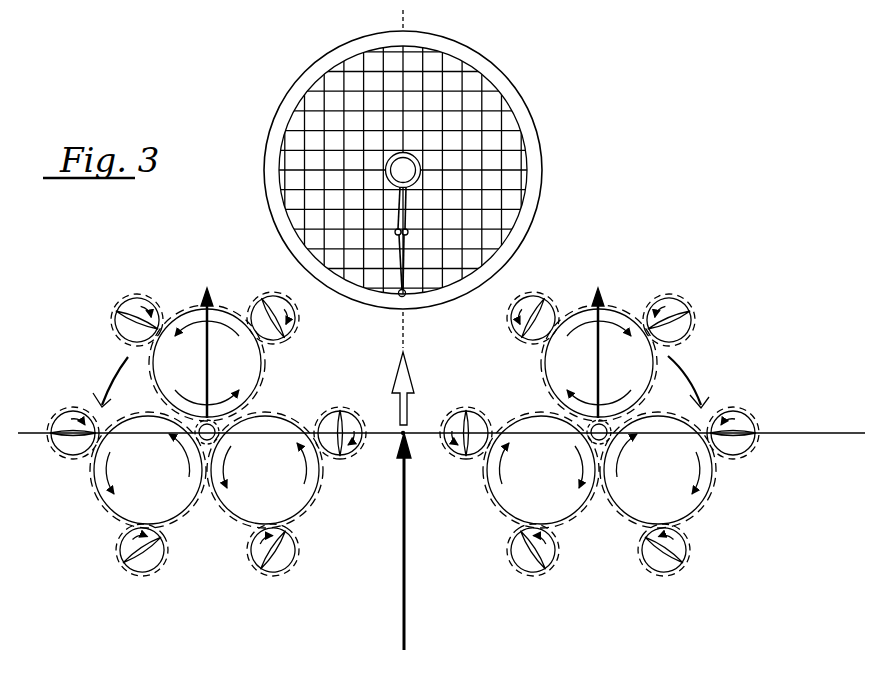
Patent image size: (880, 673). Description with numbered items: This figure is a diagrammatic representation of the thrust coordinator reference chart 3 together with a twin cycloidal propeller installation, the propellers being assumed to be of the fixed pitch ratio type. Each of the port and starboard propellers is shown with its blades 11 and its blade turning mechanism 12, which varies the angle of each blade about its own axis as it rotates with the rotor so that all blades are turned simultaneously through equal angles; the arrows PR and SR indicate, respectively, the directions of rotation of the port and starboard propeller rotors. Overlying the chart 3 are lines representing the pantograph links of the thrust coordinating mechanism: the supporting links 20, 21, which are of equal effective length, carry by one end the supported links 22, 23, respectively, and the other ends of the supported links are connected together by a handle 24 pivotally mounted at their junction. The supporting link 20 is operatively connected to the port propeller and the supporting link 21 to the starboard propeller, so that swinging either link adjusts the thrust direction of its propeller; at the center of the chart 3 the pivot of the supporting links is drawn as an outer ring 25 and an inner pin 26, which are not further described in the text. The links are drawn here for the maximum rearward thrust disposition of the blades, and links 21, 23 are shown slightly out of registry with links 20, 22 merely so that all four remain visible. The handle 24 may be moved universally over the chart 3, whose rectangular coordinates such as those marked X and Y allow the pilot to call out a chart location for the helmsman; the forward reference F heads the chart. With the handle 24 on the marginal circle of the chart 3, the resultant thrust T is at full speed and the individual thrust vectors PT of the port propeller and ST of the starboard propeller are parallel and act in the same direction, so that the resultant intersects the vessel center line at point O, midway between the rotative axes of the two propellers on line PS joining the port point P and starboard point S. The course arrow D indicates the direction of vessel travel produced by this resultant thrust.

The thrust coordinator reference chart 3 is at (282, 117).
The inner ring of dial X is at (290, 147).
The grid of dial Y is at (303, 164).
The forward direction line F is at (411, 178).
The supporting link 20 is at (395, 219).
The supporting link 21 is at (407, 198).
The supported link 22 is at (402, 252).
The supported link 23 is at (404, 252).
The handle 24 is at (405, 296).
The hub ring 25 is at (421, 161).
The hub pin 26 is at (413, 171).
The blades 11 is at (274, 553).
The blade turning mechanism 12 is at (167, 394).
The course arrow D is at (413, 391).
The resultant thrust T is at (408, 583).
The point O is at (398, 438).
The port propeller axis point P is at (207, 432).
The starboard propeller axis point S is at (599, 432).
The port propeller thrust vector PT is at (208, 362).
The starboard propeller thrust vector ST is at (599, 358).
The port rotor rotation arrow PR is at (112, 372).
The starboard rotor rotation arrow SR is at (692, 376).